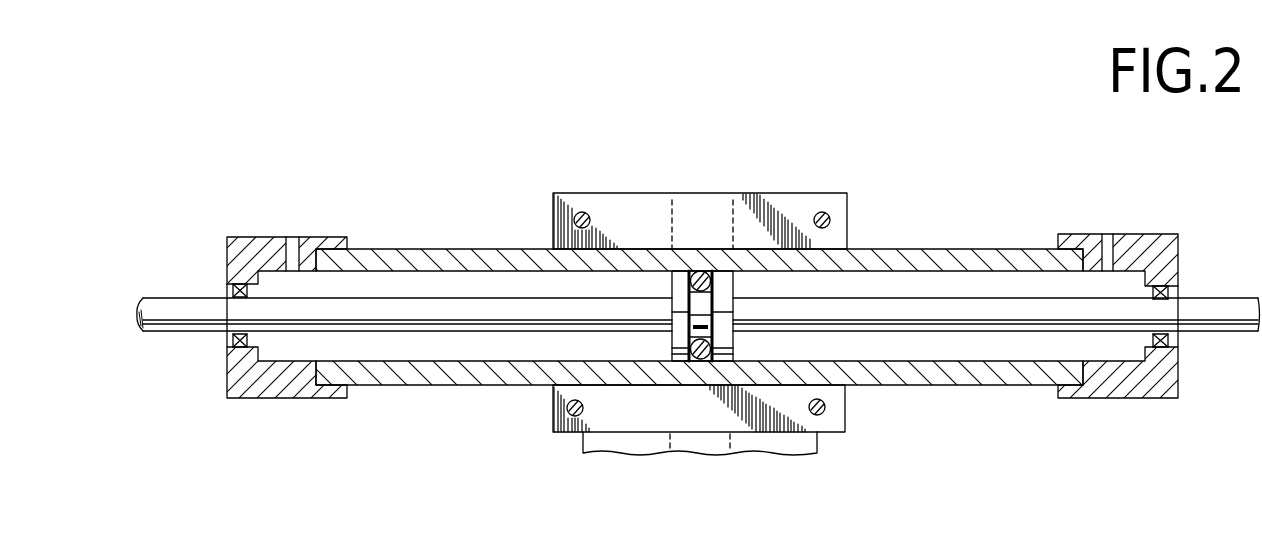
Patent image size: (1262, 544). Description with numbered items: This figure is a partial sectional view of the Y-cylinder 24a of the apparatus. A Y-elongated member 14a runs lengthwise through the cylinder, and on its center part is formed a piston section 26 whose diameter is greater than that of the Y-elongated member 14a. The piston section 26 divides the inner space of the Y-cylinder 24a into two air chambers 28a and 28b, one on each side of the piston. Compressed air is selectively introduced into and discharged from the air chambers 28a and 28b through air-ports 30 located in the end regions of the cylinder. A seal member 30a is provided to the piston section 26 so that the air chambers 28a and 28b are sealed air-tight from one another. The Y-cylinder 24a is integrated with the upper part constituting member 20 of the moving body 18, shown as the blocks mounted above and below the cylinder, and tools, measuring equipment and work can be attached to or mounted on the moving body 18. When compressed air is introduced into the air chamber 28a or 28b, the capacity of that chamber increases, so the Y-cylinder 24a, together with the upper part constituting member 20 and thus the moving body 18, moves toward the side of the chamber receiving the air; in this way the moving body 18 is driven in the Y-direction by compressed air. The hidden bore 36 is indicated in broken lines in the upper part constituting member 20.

The Y-elongated member 14a is at (165, 332).
The moving body 18 is at (843, 192).
The upper part constituting member 20 is at (620, 205).
The Y-cylinder 24a is at (984, 386).
The piston section 26 is at (733, 338).
The air chamber 28a is at (913, 285).
The air chamber 28b is at (412, 288).
The air-port 30 is at (292, 271).
The seal member 30a is at (236, 348).
The bore 36 is at (748, 194).